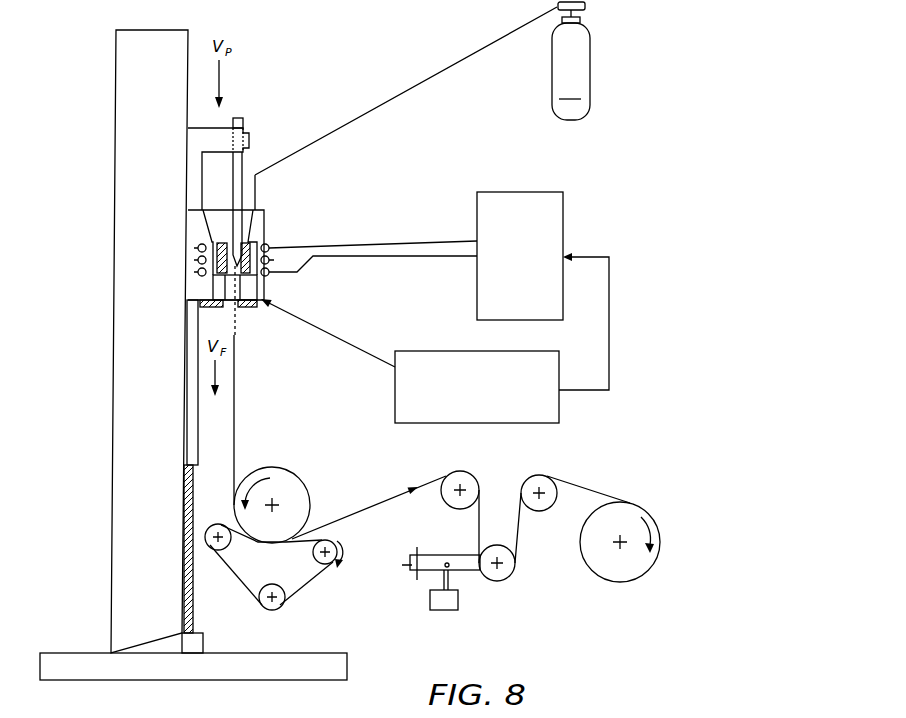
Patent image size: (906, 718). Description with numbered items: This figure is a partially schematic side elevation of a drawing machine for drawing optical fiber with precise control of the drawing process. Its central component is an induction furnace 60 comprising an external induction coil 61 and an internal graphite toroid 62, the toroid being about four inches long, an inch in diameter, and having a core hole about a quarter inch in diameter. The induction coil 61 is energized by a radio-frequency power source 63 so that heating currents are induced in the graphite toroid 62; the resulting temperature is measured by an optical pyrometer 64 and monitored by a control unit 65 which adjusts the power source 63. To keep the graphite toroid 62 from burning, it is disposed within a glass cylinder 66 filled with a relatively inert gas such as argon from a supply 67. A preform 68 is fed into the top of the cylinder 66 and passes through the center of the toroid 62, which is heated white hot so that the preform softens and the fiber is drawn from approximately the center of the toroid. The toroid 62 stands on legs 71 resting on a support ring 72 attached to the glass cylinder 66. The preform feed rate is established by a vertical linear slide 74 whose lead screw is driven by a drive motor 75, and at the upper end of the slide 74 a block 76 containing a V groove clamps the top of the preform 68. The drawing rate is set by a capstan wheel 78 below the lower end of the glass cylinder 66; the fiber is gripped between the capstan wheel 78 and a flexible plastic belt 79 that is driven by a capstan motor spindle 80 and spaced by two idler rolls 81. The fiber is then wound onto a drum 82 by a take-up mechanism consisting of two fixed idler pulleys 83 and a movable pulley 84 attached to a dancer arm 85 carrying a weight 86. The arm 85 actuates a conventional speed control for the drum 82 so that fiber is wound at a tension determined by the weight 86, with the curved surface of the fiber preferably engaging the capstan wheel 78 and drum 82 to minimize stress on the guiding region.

The induction furnace 60 is at (106, 350).
The external induction coil 61 is at (271, 246).
The internal graphite toroid 62 is at (250, 243).
The radio-frequency power source 63 is at (530, 192).
The optical pyrometer 64 is at (266, 301).
The control unit 65 is at (540, 351).
The glass cylinder 66 is at (265, 210).
The supply 67 is at (590, 72).
The preform 68 is at (243, 158).
The legs 71 is at (253, 284).
The support ring 72 is at (252, 307).
The vertical linear slide 74 is at (198, 442).
The drive motor 75 is at (203, 643).
The block 76 is at (243, 128).
The capstan wheel 78 is at (299, 478).
The flexible plastic belt 79 is at (304, 589).
The capstan motor spindle 80 is at (331, 541).
The idler rolls 81 is at (208, 548).
The drum 82 is at (621, 582).
The fixed idler pulleys 83 is at (462, 471).
The movable pulley 84 is at (513, 574).
The dancer arm 85 is at (470, 578).
The weight 86 is at (438, 610).